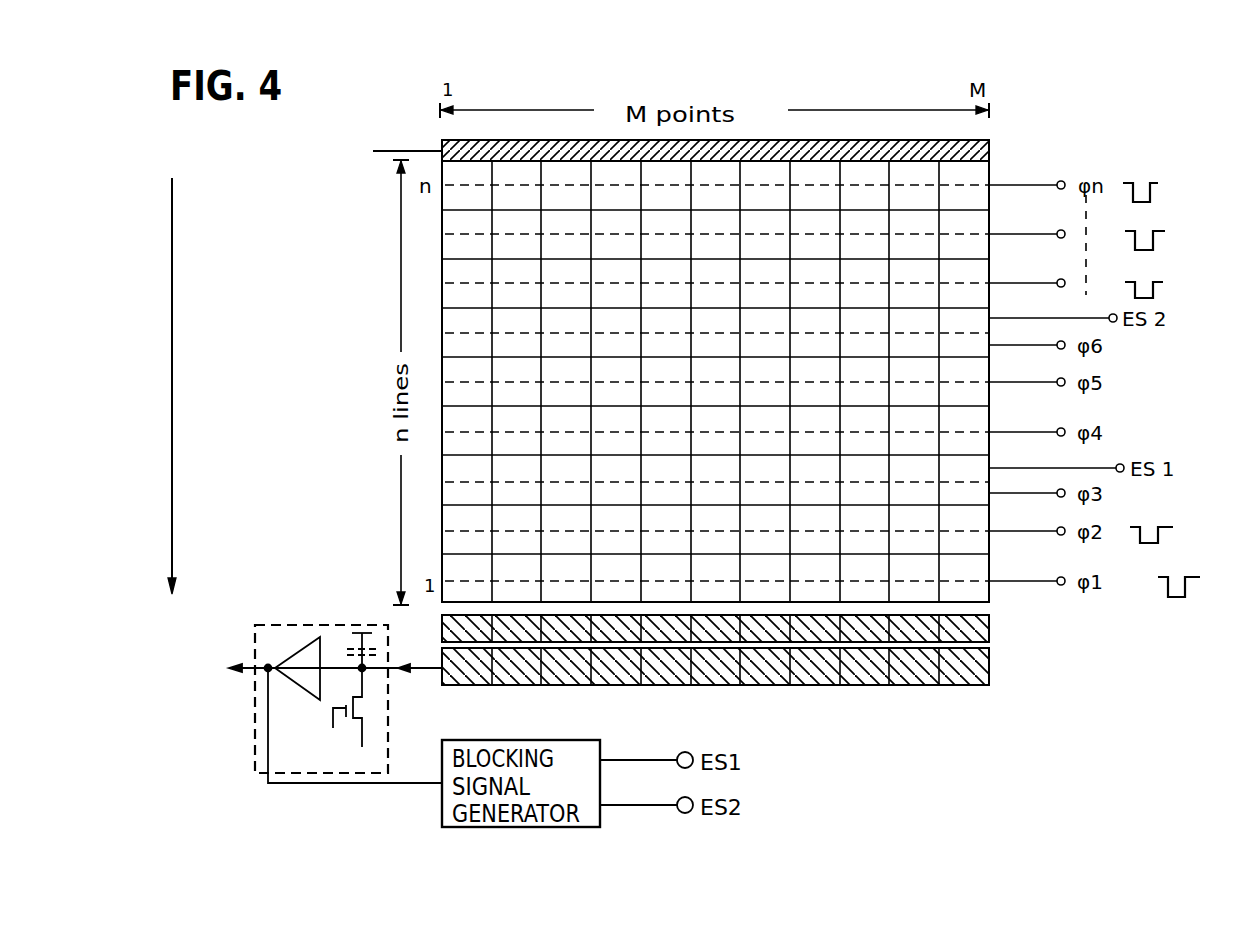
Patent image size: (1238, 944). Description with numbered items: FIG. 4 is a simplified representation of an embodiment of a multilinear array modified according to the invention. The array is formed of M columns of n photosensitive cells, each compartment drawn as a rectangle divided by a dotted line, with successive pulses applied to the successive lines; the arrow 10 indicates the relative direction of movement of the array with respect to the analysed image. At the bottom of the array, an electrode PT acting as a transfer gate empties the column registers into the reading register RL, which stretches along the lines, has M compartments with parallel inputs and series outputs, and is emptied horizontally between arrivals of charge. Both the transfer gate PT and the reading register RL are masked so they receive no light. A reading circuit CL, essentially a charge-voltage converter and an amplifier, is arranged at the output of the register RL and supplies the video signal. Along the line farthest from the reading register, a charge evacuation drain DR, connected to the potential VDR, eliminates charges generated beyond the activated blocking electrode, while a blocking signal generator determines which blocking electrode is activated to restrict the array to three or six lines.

The arrow 10 is at (171, 410).
The charge evacuation drain DR is at (880, 140).
The drain register voltage line VDR is at (396, 138).
The transfer gate PT is at (457, 632).
The reading register RL is at (1008, 663).
The reading circuit CL is at (276, 624).